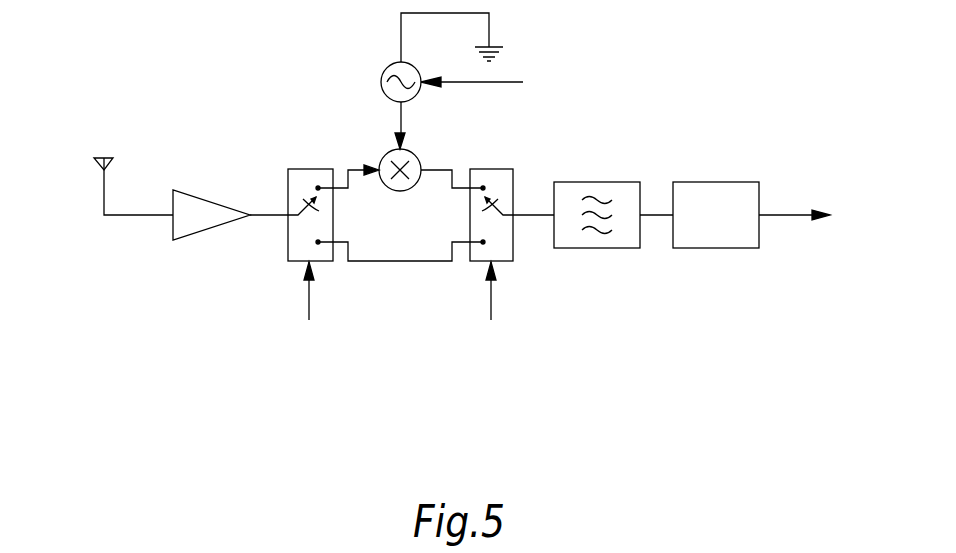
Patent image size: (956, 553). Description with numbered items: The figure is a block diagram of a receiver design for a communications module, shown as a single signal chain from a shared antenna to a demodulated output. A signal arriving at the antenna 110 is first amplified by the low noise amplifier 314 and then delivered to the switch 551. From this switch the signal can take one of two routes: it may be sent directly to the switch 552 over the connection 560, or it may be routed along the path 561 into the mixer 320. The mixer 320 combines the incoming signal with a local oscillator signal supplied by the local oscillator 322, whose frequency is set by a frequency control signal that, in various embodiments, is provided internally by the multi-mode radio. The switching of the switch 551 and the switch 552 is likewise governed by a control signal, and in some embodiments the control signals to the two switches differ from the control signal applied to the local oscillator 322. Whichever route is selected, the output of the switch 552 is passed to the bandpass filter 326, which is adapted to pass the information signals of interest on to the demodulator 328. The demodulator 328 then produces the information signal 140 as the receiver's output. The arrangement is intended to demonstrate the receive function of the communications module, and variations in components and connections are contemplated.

The antenna 110 is at (106, 180).
The low noise amplifier 314 is at (189, 193).
The switch 551 is at (311, 168).
The switch 552 is at (492, 168).
The mixer signal path 561 is at (437, 168).
The connection 560 is at (400, 262).
The mixer 320 is at (400, 191).
The local oscillator 322 is at (384, 68).
The bandpass filter 326 is at (600, 181).
The demodulator 328 is at (719, 181).
The information signal 140 is at (791, 213).